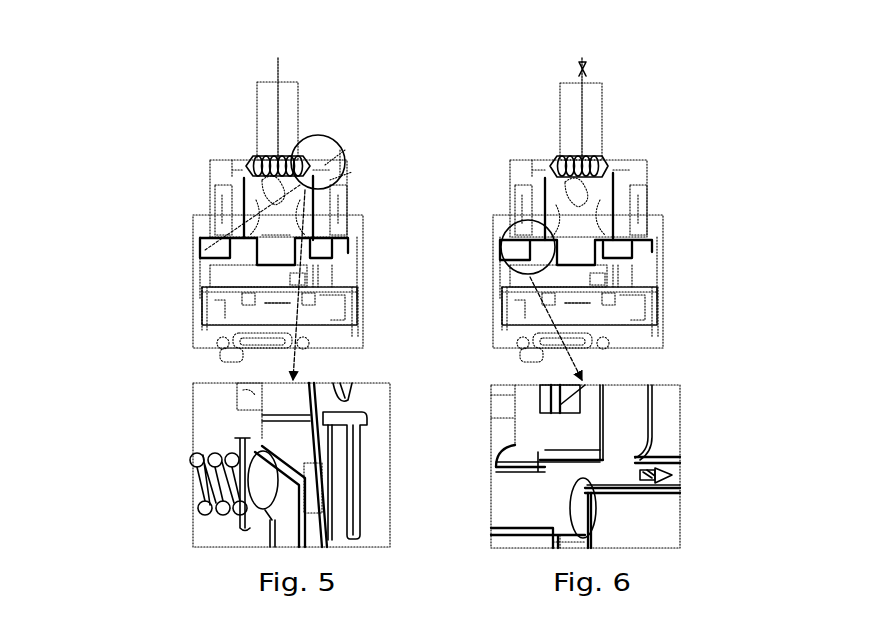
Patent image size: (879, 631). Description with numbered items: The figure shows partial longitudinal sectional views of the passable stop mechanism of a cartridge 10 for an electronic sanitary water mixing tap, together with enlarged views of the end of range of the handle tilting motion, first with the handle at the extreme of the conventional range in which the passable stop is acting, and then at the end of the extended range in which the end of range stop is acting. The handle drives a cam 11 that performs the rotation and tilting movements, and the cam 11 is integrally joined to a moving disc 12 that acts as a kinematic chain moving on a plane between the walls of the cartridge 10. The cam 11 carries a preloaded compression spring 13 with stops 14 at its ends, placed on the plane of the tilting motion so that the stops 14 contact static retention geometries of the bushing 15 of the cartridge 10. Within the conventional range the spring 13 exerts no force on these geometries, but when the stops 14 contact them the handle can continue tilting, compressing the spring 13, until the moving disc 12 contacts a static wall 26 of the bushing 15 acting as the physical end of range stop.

In FIG. 5, the cartridge 10 is at (190, 123).
In FIG. 6, the cartridge 10 is at (514, 123).
In FIG. 5, the cam 11 is at (287, 93).
In FIG. 6, the cam 11 is at (600, 105).
In FIG. 5, the moving disc 12 is at (323, 258).
In FIG. 6, the moving disc 12 is at (661, 520).
In FIG. 5, the preloaded compression spring 13 is at (252, 165).
In FIG. 6, the preloaded compression spring 13 is at (552, 157).
In FIG. 5, the stops 14 is at (330, 160).
In FIG. 6, the stops 14 is at (610, 167).
In FIG. 5, the bushing 15 is at (345, 162).
In FIG. 6, the static wall 26 is at (608, 480).